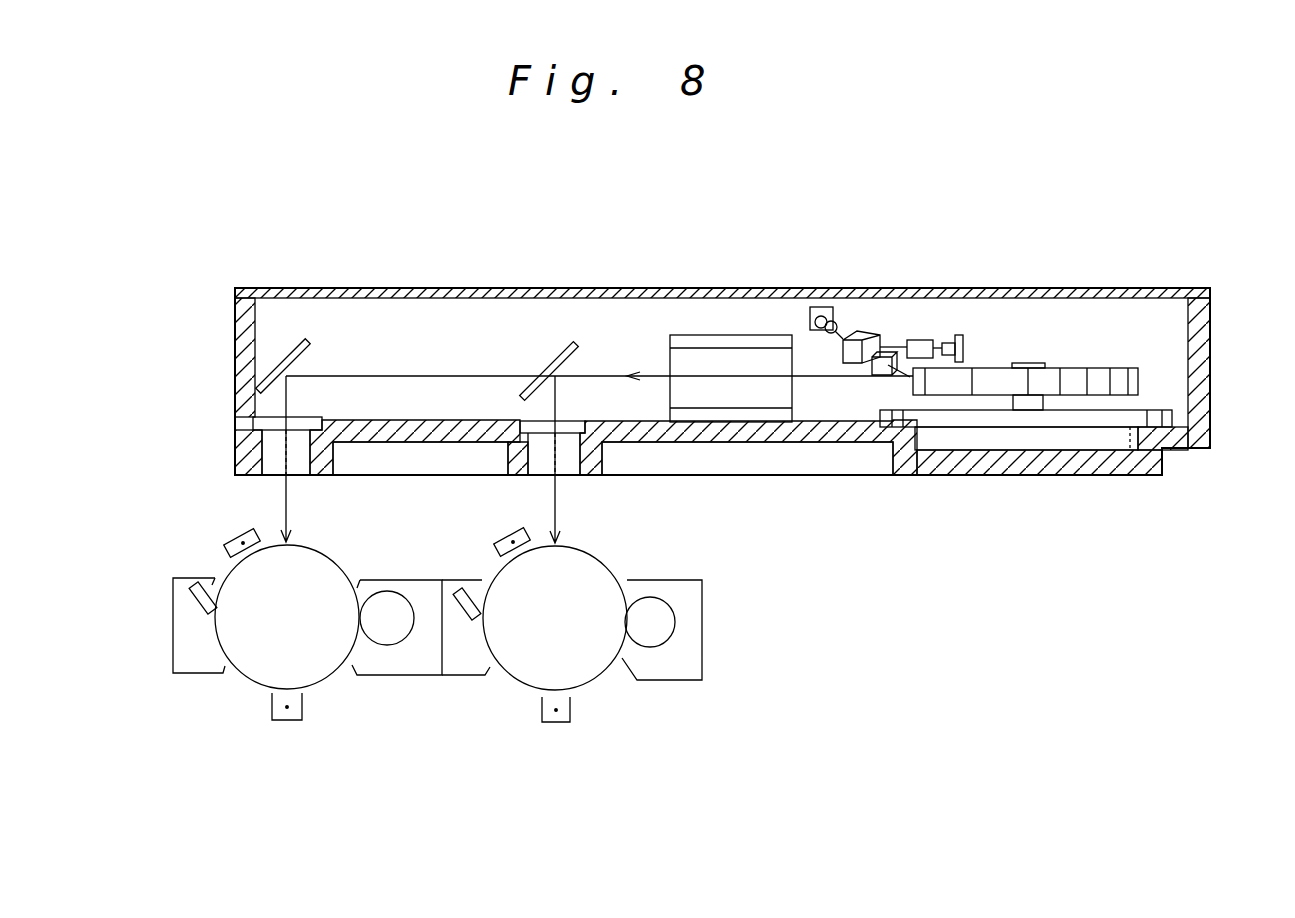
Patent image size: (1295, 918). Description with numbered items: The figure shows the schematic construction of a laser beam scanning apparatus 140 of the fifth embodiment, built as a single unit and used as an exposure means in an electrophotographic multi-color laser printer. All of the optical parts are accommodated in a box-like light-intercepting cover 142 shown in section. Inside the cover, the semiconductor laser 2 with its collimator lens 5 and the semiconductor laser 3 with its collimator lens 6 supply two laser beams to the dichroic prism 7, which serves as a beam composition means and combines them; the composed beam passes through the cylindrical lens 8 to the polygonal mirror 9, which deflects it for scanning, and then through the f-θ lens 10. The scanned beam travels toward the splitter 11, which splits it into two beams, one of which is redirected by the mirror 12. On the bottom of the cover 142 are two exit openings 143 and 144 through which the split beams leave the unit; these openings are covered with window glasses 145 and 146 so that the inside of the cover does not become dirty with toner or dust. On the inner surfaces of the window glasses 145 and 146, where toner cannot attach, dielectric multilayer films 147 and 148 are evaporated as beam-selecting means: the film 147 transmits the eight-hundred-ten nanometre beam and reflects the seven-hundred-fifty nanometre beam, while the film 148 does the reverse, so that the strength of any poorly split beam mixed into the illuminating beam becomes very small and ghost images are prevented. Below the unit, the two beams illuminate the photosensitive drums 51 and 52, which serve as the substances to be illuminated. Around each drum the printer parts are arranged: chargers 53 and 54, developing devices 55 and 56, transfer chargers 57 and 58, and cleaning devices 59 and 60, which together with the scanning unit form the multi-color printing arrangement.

The laser beam scanning apparatus 140 is at (786, 186).
The light-intercepting cover 142 is at (235, 330).
The mirror 12 is at (293, 348).
The splitter 11 is at (570, 346).
The dielectric multilayer film 147 is at (303, 423).
The dielectric multilayer film 148 is at (577, 420).
The window glass 145 is at (257, 445).
The exit opening 144 is at (577, 473).
The exit opening 143 is at (303, 465).
The window glass 146 is at (540, 433).
The f-θ lens 10 is at (752, 405).
The semiconductor laser 2 is at (812, 307).
The collimator lens 5 is at (834, 321).
The dichroic prism 7 is at (873, 333).
The cylindrical lens 8 is at (872, 372).
The collimator lens 6 is at (920, 340).
The semiconductor laser 3 is at (961, 335).
The polygonal mirror 9 is at (1138, 378).
The photosensitive drum 51 is at (248, 680).
The photosensitive drum 52 is at (523, 689).
The charger 53 is at (237, 531).
The charger 54 is at (497, 543).
The developing device 55 is at (378, 678).
The developing device 56 is at (670, 681).
The transfer charger 57 is at (288, 722).
The transfer charger 58 is at (564, 727).
The cleaning device 59 is at (187, 678).
The cleaning device 60 is at (455, 678).